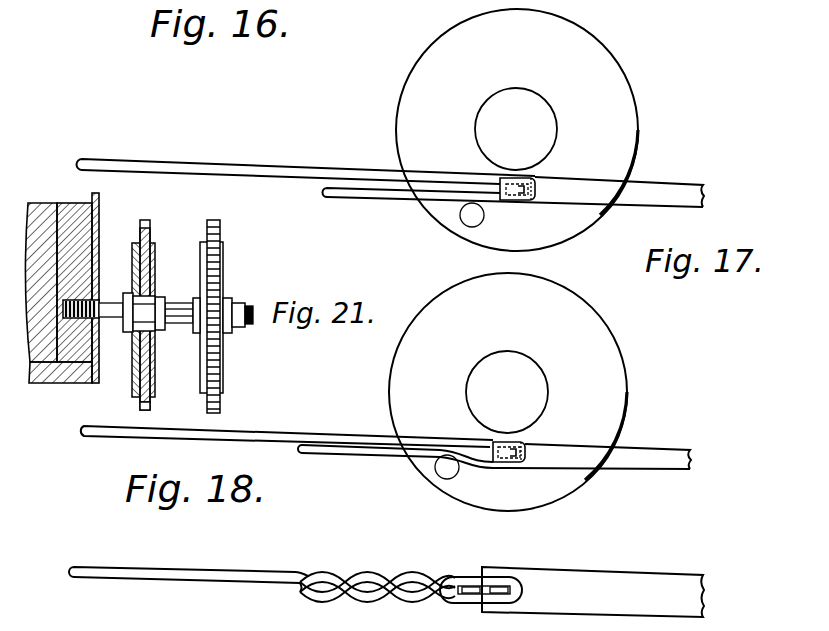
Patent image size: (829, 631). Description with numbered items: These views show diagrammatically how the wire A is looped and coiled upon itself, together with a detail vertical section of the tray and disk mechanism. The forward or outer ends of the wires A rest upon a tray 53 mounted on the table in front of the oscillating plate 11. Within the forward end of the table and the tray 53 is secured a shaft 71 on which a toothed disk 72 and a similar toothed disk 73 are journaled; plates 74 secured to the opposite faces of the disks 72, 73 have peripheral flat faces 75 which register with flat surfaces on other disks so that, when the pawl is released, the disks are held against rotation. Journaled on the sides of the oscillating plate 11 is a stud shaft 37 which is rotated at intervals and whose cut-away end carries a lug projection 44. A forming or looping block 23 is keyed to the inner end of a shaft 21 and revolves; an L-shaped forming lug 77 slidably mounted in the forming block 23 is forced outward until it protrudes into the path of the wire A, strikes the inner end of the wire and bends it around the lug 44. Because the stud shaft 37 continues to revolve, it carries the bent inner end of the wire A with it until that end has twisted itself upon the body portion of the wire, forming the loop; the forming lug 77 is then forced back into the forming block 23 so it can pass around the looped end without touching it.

In FIG. 21, the oscillating plate 11 is at (38, 203).
In FIG. 21, the tray 53 is at (95, 202).
In FIG. 21, the shaft 71 is at (105, 300).
In FIG. 21, the disk 72 is at (221, 409).
In FIG. 21, the disk 73 is at (139, 405).
In FIG. 21, the plates 74 is at (133, 243).
In FIG. 21, the peripheral flat faces 75 is at (221, 274).
In FIG. 16, the shaft 21 is at (543, 135).
In FIG. 17, the shaft 21 is at (540, 387).
In FIG. 16, the forming block 23 is at (622, 141).
In FIG. 17, the forming block 23 is at (617, 400).
In FIG. 16, the stud shaft 37 is at (699, 187).
In FIG. 17, the stud shaft 37 is at (677, 448).
In FIG. 18, the stud shaft 37 is at (560, 573).
In FIG. 16, the lug projection 44 is at (527, 200).
In FIG. 17, the lug projection 44 is at (508, 461).
In FIG. 18, the lug projection 44 is at (500, 590).
In FIG. 16, the forming lug 77 is at (468, 219).
In FIG. 17, the forming lug 77 is at (445, 470).
In FIG. 16, the wire A is at (290, 170).
In FIG. 17, the wire A is at (253, 432).
In FIG. 18, the wire A is at (273, 578).